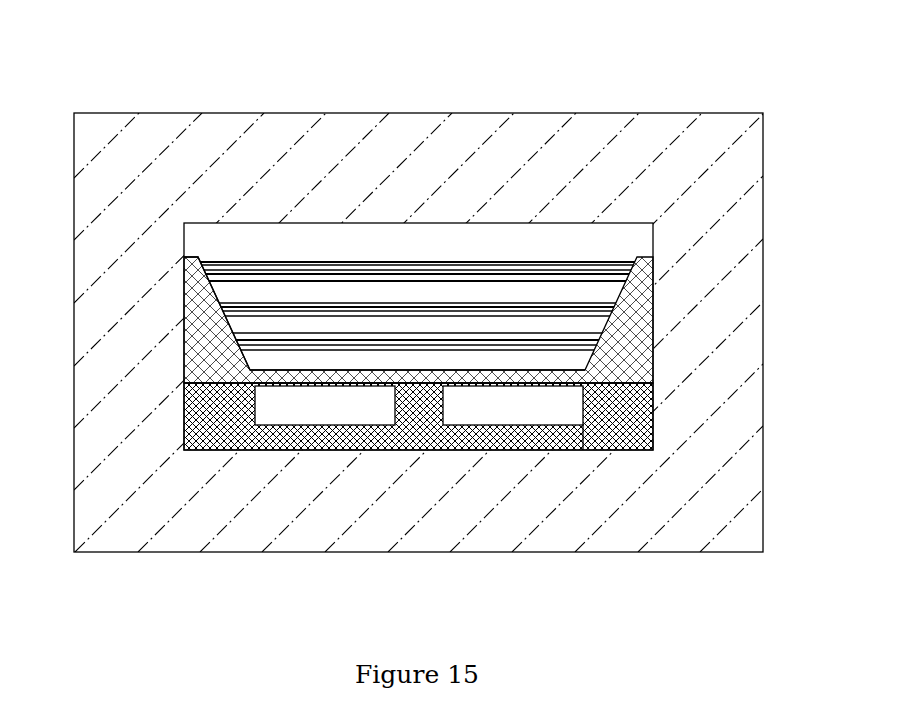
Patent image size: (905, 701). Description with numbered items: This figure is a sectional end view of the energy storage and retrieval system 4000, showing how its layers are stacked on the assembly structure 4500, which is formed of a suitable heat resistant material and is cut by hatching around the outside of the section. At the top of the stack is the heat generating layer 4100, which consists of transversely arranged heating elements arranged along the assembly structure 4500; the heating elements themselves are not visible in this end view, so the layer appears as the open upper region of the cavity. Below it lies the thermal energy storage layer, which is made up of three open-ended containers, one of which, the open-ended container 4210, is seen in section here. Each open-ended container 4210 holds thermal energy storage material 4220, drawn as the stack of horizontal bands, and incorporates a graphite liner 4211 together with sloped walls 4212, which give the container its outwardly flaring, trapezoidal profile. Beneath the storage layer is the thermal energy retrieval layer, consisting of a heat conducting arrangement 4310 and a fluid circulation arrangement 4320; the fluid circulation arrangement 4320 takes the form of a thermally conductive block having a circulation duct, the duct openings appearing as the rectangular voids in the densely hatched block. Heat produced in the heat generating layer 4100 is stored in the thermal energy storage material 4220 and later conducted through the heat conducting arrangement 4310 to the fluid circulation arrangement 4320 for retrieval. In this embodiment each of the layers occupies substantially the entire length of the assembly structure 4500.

The system 4000 is at (415, 311).
The heat generating layer 4100 is at (414, 232).
The open-ended container 4210 is at (416, 315).
The graphite liner 4211 is at (208, 308).
The sloped walls 4212 is at (240, 362).
The thermal energy storage material 4220 is at (360, 295).
The heat conducting arrangement 4310 is at (416, 492).
The fluid circulation arrangement 4320 is at (630, 406).
The assembly structure 4500 is at (138, 497).